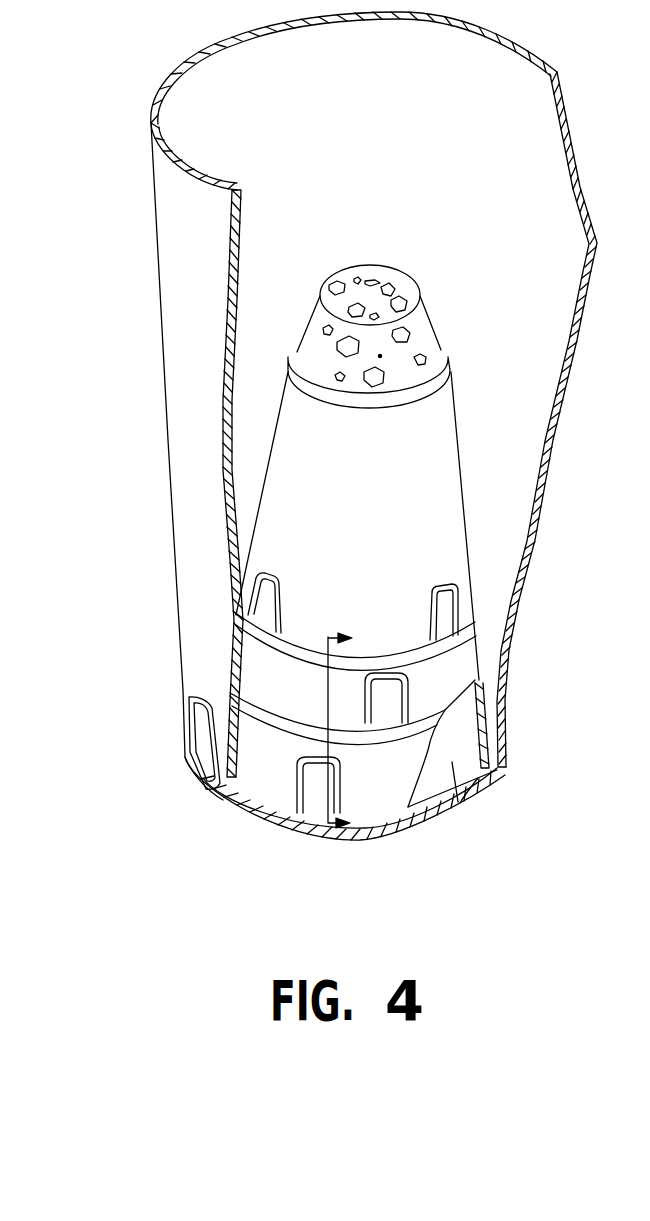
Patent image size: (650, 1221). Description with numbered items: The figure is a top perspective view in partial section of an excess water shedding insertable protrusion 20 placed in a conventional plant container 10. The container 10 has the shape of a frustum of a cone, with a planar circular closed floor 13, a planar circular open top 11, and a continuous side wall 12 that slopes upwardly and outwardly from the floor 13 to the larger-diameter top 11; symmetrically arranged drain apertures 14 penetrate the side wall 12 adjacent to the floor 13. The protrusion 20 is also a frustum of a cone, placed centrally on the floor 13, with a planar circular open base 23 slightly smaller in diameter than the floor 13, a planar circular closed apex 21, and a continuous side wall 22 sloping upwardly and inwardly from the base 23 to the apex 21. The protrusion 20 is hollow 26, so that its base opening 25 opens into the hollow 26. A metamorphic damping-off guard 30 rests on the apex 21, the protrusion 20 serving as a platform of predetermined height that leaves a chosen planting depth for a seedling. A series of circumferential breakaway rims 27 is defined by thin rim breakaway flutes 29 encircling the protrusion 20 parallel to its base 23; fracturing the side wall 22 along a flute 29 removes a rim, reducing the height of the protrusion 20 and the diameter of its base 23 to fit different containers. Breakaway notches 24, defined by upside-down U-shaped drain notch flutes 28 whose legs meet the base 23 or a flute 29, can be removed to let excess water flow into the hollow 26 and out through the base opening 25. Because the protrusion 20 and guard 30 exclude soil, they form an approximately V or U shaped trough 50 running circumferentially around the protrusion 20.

The conventional plant container 10 is at (207, 47).
The top 11 is at (172, 70).
The side wall 12 is at (175, 373).
The soil receiving space floor 13 is at (235, 798).
The drain apertures 14 is at (186, 742).
The insertable protrusion 20 is at (455, 433).
The apex 21 is at (452, 355).
The side wall 22 is at (448, 512).
The base 23 is at (405, 826).
The breakaway notches 24 is at (275, 592).
The base opening 25 is at (480, 780).
The hollow 26 is at (458, 802).
The breakaway rims 27 is at (455, 662).
The drain notch flutes 28 is at (268, 578).
The rim breakaway flutes 29 is at (308, 651).
The metamorphic damping-off guard 30 is at (393, 275).
The trough 50 is at (492, 712).